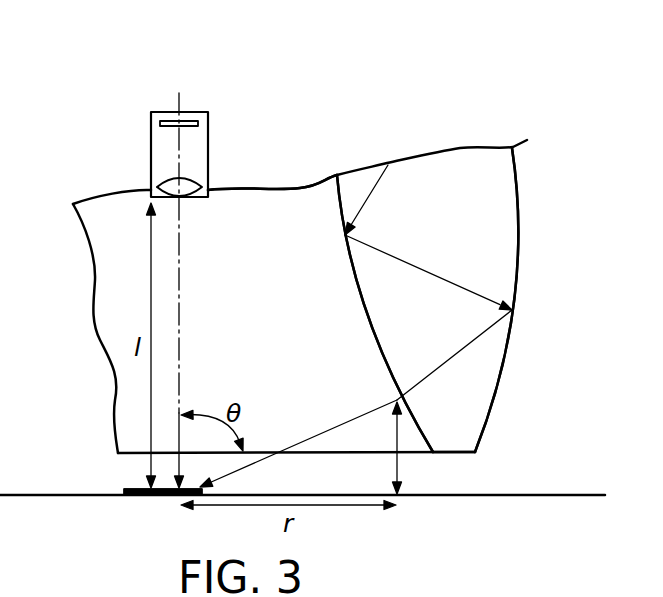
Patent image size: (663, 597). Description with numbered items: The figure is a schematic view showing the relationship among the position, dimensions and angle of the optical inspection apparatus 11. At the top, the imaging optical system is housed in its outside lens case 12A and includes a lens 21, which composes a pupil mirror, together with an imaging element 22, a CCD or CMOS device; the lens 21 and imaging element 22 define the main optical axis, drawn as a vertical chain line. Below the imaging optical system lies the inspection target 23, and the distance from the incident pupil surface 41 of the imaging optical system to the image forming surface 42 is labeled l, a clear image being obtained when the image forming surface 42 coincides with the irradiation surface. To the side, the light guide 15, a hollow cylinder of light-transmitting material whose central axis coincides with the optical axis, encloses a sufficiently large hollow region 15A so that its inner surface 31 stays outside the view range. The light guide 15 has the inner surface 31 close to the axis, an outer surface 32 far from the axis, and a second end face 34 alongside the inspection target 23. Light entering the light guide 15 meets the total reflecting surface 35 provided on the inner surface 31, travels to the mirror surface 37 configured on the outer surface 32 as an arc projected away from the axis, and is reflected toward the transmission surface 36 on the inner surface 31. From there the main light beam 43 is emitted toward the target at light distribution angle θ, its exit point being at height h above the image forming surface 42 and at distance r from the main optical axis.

The optical inspection apparatus 11 is at (315, 80).
The outside lens case 12A is at (210, 150).
The light guide 15 is at (467, 168).
The hollow region 15A is at (288, 247).
The lens 21 is at (160, 182).
The imaging element 22 is at (160, 124).
The inspection target 23 is at (135, 490).
The image forming surface 42 is at (126, 475).
The inner surface 31 is at (352, 293).
The outer surface 32 is at (529, 300).
The second end face 34 is at (455, 455).
The total reflecting surface 35 is at (342, 215).
The transmission surface 36 is at (393, 387).
The mirror surface 37 is at (518, 273).
The incident pupil surface 41 is at (188, 200).
The main light beam 43 is at (345, 417).